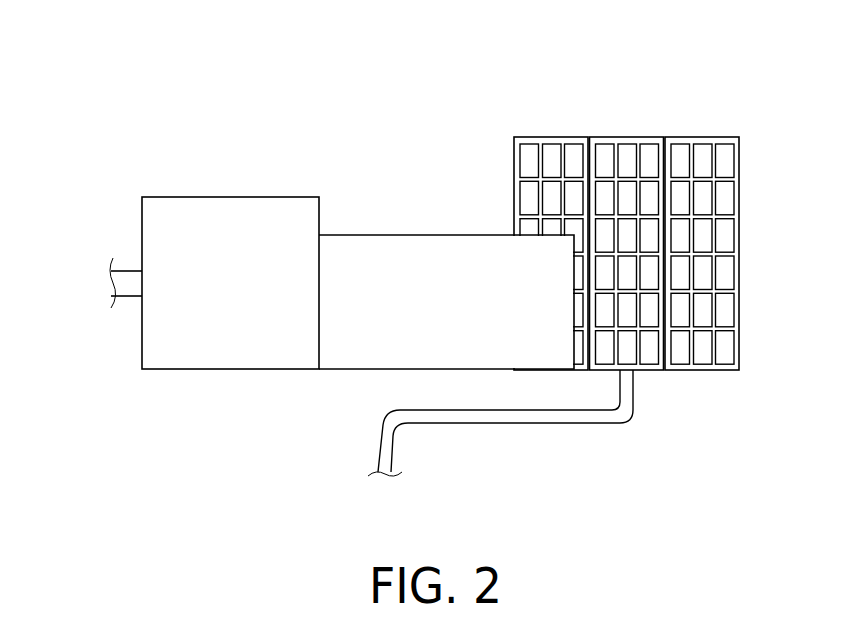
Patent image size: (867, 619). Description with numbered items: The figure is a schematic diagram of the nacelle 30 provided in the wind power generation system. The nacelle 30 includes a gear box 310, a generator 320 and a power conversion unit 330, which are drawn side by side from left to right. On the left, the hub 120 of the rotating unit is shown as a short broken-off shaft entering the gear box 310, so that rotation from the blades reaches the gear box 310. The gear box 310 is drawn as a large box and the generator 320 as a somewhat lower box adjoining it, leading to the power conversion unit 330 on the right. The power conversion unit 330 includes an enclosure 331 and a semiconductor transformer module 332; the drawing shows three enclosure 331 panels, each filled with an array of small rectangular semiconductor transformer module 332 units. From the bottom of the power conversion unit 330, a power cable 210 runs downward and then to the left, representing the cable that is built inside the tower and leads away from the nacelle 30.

The nacelle 30 is at (194, 43).
The hub 120 is at (120, 283).
The power cable 210 is at (531, 423).
The gear box 310 is at (217, 207).
The generator 320 is at (407, 247).
The power conversion unit 330 is at (565, 202).
The enclosure 331 is at (738, 231).
The semiconductor transformer module 332 is at (727, 158).